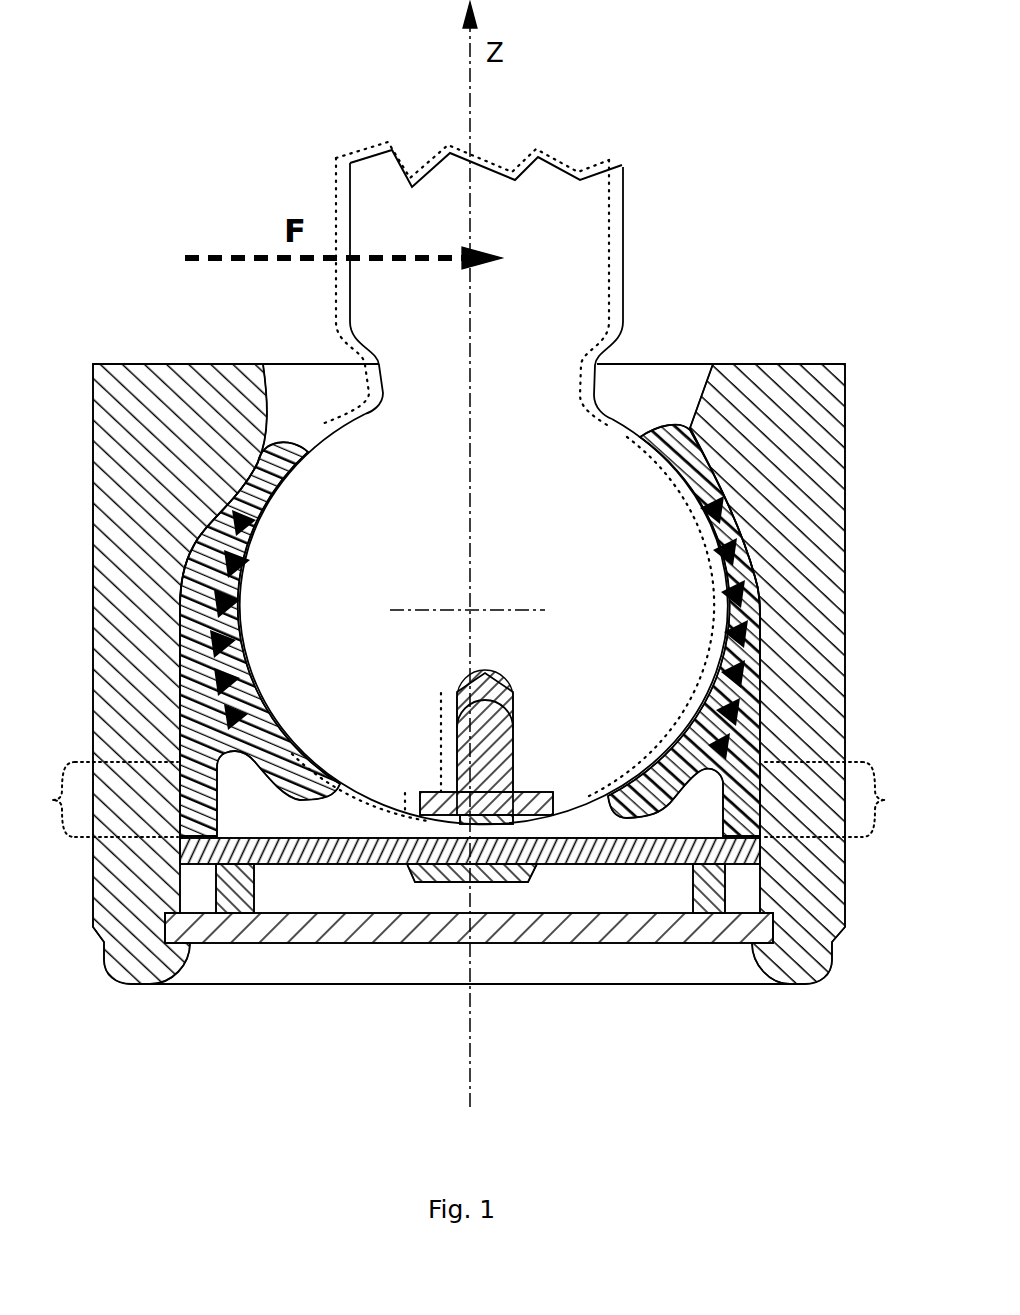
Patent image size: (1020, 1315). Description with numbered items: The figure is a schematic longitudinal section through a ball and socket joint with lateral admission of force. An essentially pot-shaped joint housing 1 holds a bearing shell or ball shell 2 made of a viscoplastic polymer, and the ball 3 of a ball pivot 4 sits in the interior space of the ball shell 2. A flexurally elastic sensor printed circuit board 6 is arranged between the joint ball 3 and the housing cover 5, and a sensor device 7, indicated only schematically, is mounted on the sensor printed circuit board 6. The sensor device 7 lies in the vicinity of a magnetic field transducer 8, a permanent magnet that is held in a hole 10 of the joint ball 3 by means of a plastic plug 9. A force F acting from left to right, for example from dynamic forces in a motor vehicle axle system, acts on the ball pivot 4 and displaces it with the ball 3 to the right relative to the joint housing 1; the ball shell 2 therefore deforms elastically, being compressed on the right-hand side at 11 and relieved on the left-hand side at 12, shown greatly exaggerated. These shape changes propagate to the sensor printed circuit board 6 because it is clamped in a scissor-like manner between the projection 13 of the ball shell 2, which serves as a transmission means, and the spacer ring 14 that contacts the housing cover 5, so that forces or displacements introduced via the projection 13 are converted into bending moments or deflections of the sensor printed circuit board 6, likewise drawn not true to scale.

The joint housing 1 is at (787, 386).
The ball shell 2 is at (280, 457).
The ball 3 is at (380, 470).
The ball pivot 4 is at (690, 192).
The housing cover 5 is at (628, 930).
The sensor printed circuit board 6 is at (308, 862).
The sensor device 7 is at (430, 886).
The magnetic field transducer 8 is at (496, 802).
The plastic plug 9 is at (518, 704).
The hole 10 is at (485, 690).
The compressed side of the ball shell 11 is at (745, 570).
The relieved side of the ball shell 12 is at (193, 568).
The projection of the ball shell 13 is at (475, 799).
The spacer ring 14 is at (235, 888).